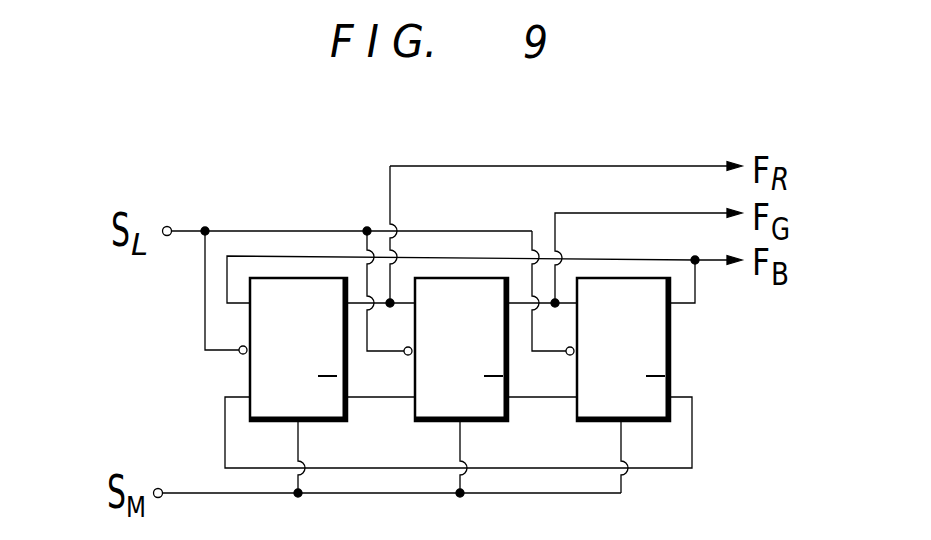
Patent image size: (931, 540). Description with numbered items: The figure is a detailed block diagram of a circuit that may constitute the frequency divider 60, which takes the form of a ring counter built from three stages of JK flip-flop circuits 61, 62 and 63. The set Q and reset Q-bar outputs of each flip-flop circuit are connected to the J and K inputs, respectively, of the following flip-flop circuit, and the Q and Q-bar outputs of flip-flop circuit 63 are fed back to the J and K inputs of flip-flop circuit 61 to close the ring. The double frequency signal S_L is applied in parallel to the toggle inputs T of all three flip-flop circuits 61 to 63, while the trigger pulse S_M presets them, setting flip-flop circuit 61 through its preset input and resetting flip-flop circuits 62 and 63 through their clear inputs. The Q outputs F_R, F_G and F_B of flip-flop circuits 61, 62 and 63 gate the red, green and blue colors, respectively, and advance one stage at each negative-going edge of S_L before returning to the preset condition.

The frequency divider 60 is at (331, 175).
The first JK flip-flop circuit 61 is at (322, 422).
The second JK flip-flop circuit 62 is at (485, 422).
The third JK flip-flop circuit 63 is at (633, 426).